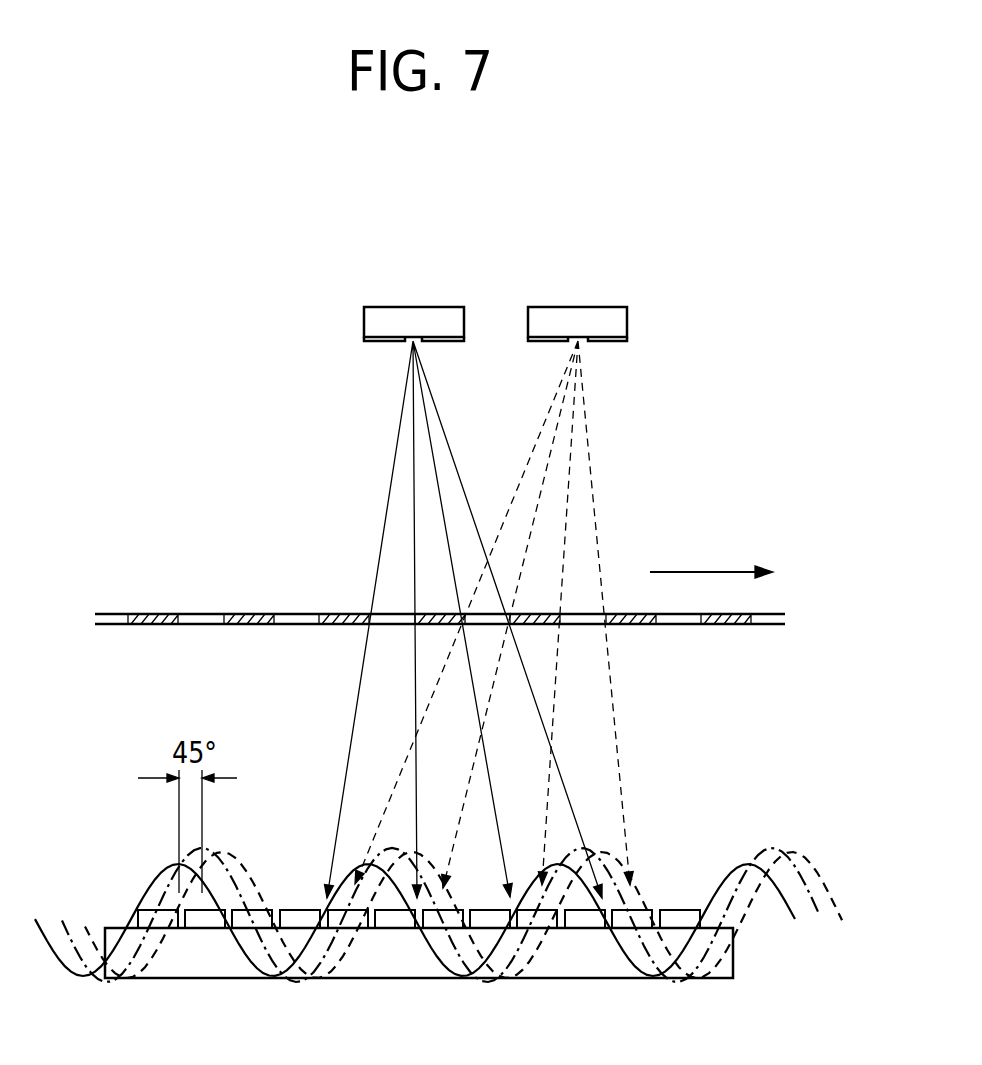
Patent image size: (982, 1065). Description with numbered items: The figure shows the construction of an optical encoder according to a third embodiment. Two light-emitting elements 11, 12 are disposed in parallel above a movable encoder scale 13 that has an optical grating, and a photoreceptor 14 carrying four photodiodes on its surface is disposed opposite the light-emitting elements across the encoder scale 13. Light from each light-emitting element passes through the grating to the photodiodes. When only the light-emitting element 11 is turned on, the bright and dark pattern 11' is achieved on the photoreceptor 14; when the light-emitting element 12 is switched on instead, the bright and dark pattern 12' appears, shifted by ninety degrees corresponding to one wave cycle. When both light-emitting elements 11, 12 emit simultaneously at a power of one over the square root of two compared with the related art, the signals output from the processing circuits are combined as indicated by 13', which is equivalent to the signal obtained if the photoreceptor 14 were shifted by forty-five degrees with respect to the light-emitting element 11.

The light-emitting element 11 is at (414, 291).
The light-emitting element 12 is at (577, 291).
The encoder scale 13 is at (440, 587).
The photoreceptor 14 is at (733, 963).
The bright and dark pattern 11' is at (441, 888).
The bright and dark pattern 12' is at (479, 889).
The combined signal 13' is at (416, 857).